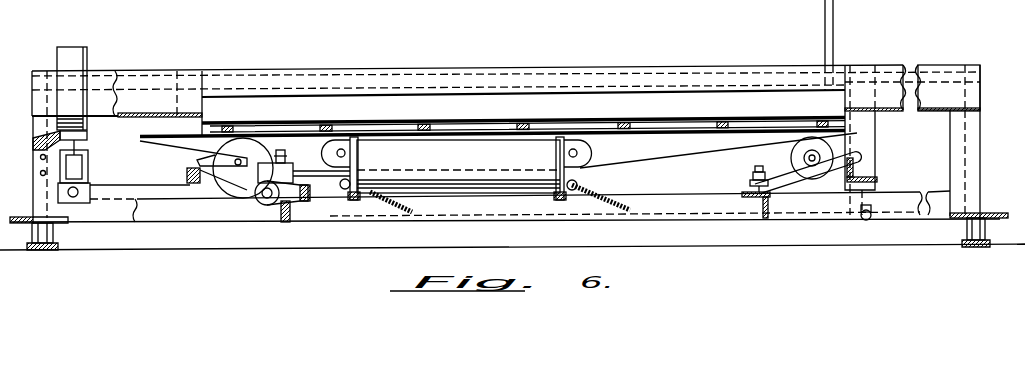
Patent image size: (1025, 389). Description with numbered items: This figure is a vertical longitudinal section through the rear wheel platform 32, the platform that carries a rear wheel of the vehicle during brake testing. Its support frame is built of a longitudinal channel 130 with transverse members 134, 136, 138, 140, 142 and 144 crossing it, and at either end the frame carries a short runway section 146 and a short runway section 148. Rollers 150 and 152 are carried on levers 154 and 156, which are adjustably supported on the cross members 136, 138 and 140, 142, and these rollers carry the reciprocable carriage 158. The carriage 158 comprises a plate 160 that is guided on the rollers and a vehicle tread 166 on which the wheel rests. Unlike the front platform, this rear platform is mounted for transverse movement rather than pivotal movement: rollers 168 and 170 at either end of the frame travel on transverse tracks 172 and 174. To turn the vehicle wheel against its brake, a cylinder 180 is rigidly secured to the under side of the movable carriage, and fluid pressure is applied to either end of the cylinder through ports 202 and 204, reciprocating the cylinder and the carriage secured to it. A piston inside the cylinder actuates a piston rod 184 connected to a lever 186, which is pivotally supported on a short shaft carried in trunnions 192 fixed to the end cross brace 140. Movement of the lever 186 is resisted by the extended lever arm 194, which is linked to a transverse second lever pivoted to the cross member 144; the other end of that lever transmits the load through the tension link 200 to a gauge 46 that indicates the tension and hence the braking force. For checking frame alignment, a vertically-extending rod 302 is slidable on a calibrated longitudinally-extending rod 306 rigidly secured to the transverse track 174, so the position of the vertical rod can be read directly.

The rear wheel platform 32 is at (662, 116).
The gauge 46 is at (70, 52).
The longitudinal channel 130 is at (898, 207).
The transverse member 134 is at (987, 193).
The transverse member 136 is at (878, 178).
The transverse member 138 is at (757, 198).
The transverse member 140 is at (286, 206).
The transverse member 142 is at (178, 181).
The transverse member 144 is at (32, 217).
The short runway section 146 is at (937, 112).
The short runway section 148 is at (141, 112).
The roller 150 is at (222, 184).
The roller 152 is at (810, 182).
The lever 154 is at (788, 172).
The lever 156 is at (197, 163).
The reciprocable carriage 158 is at (312, 124).
The plate 160 is at (641, 133).
The vehicle tread 166 is at (468, 123).
The roller 168 is at (45, 252).
The roller 170 is at (978, 248).
The transverse track 172 is at (32, 250).
The transverse track 174 is at (962, 246).
The cylinder 180 is at (457, 168).
The piston rod 184 is at (320, 161).
The lever 186 is at (263, 207).
The trunnions 192 is at (253, 201).
The extended lever arm 194 is at (167, 198).
The tension link 200 is at (82, 149).
The port 202 is at (578, 183).
The port 204 is at (337, 196).
The vertically-extending rod 302 is at (834, 27).
The longitudinally-extending rod 306 is at (742, 72).